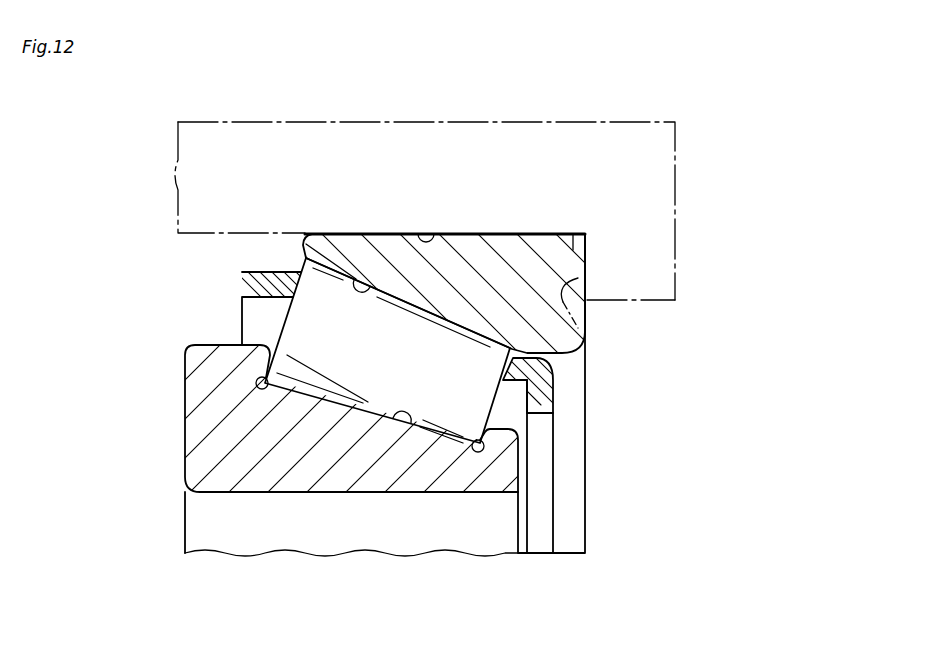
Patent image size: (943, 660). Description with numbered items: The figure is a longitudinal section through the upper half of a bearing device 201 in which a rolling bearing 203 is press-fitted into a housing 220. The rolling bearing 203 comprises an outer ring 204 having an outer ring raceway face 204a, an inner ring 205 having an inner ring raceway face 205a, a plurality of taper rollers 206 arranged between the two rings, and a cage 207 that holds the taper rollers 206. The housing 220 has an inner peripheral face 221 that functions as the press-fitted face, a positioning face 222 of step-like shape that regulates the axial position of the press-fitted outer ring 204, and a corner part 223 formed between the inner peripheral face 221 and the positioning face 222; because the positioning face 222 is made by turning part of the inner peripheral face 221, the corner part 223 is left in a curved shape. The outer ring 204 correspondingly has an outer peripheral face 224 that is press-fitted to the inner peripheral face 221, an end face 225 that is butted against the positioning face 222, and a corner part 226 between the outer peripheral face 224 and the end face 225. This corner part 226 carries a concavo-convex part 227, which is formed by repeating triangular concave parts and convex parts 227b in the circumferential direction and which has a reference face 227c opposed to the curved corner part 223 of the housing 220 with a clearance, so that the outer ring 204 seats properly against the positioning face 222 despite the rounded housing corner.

The bearing device 201 is at (722, 184).
The rolling bearing 203 is at (187, 362).
The outer ring 204 is at (502, 250).
The outer ring raceway face 204a is at (378, 284).
The inner ring 205 is at (298, 478).
The inner ring raceway face 205a is at (413, 427).
The taper rollers 206 is at (293, 338).
The cage 207 is at (242, 282).
The housing 220 is at (652, 122).
The inner peripheral face 221 is at (435, 232).
The positioning face 222 is at (587, 334).
The corner part 223 is at (587, 243).
The outer peripheral face 224 is at (330, 233).
The end face 225 is at (587, 311).
The corner part 226 is at (587, 232).
The concavo-convex part 227 is at (587, 254).
The convex parts 227b is at (577, 233).
The reference face 227c is at (565, 250).